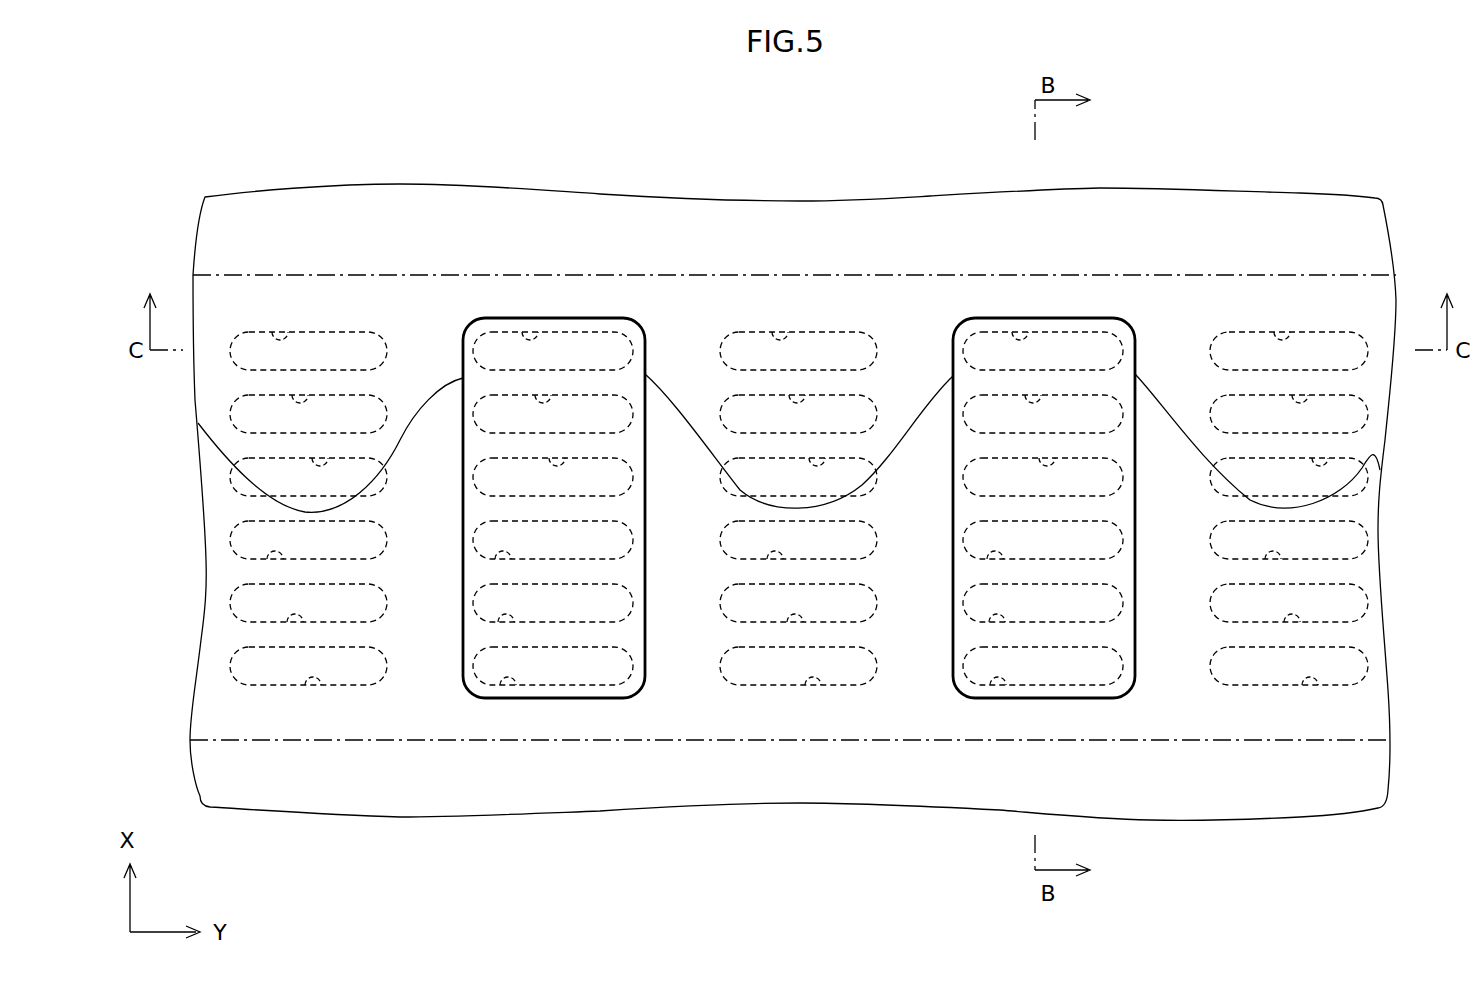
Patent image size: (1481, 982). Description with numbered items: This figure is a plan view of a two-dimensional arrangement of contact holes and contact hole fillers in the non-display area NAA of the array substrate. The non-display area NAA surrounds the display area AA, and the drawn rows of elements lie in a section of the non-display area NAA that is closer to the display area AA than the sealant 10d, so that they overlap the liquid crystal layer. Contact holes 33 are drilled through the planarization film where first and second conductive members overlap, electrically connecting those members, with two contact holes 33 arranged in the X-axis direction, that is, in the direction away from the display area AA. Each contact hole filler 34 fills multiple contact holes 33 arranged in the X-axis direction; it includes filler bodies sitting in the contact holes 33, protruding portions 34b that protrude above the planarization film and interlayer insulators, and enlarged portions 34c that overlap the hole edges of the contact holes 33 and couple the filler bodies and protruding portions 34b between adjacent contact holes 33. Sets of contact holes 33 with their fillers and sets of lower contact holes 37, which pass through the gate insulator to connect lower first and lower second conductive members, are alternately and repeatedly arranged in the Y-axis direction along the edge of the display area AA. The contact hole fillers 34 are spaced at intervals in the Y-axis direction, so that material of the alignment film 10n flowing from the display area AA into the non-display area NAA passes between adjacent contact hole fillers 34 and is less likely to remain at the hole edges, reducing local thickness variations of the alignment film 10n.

The lower contact hole 37 is at (320, 466).
The contact hole 33 is at (557, 466).
The contact hole filler 34 is at (643, 325).
The protruding portion 34b is at (592, 483).
The enlarged portion 34c is at (497, 440).
The alignment film 10n is at (680, 400).
The sealant 10d is at (391, 746).
The display area AA is at (405, 277).
The non-display area NAA is at (216, 574).